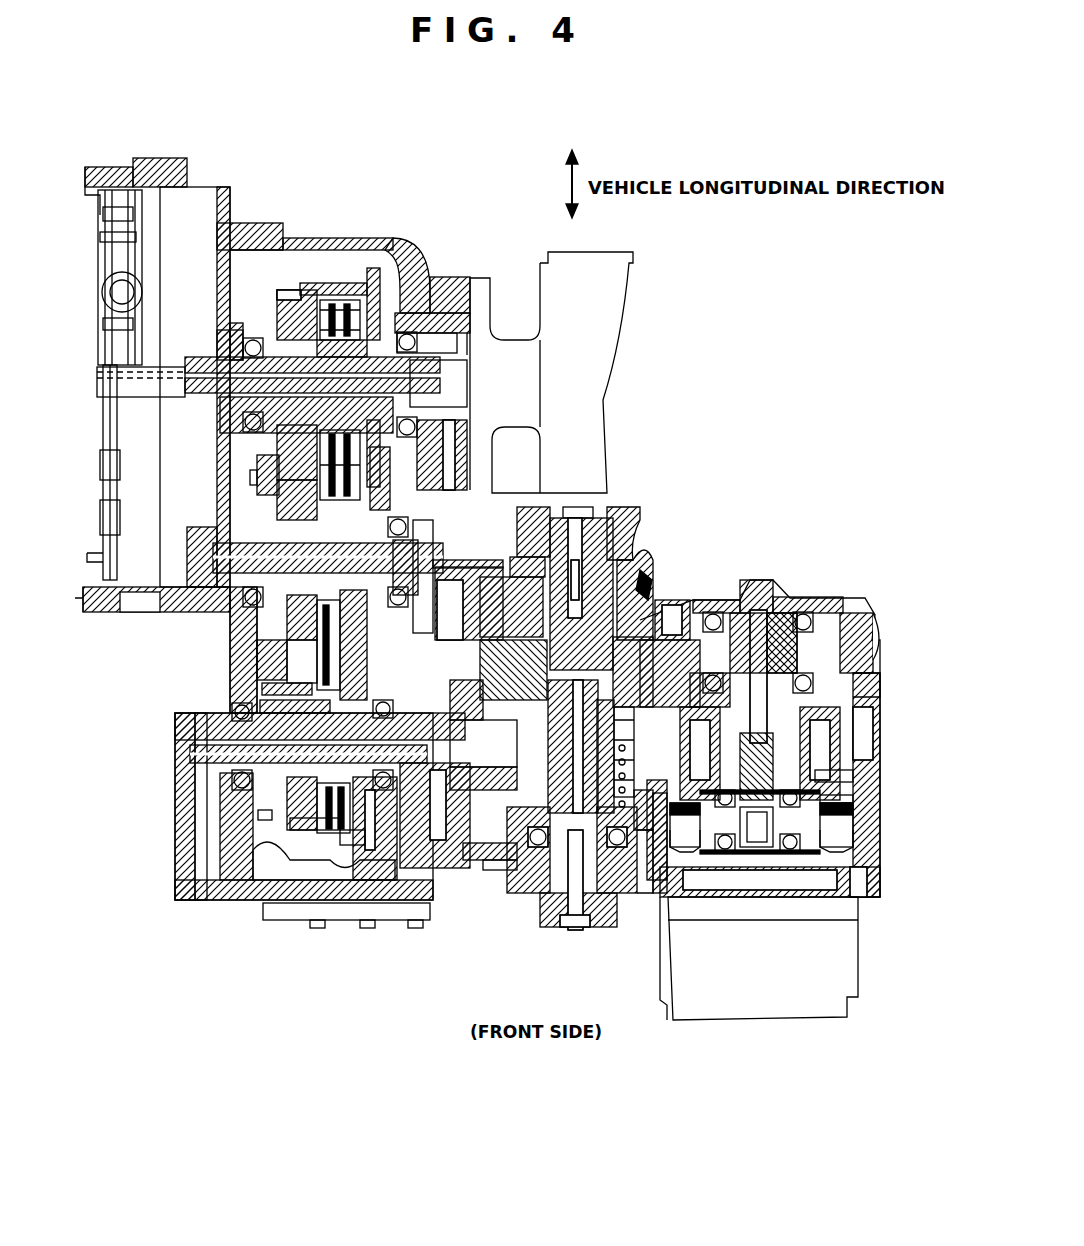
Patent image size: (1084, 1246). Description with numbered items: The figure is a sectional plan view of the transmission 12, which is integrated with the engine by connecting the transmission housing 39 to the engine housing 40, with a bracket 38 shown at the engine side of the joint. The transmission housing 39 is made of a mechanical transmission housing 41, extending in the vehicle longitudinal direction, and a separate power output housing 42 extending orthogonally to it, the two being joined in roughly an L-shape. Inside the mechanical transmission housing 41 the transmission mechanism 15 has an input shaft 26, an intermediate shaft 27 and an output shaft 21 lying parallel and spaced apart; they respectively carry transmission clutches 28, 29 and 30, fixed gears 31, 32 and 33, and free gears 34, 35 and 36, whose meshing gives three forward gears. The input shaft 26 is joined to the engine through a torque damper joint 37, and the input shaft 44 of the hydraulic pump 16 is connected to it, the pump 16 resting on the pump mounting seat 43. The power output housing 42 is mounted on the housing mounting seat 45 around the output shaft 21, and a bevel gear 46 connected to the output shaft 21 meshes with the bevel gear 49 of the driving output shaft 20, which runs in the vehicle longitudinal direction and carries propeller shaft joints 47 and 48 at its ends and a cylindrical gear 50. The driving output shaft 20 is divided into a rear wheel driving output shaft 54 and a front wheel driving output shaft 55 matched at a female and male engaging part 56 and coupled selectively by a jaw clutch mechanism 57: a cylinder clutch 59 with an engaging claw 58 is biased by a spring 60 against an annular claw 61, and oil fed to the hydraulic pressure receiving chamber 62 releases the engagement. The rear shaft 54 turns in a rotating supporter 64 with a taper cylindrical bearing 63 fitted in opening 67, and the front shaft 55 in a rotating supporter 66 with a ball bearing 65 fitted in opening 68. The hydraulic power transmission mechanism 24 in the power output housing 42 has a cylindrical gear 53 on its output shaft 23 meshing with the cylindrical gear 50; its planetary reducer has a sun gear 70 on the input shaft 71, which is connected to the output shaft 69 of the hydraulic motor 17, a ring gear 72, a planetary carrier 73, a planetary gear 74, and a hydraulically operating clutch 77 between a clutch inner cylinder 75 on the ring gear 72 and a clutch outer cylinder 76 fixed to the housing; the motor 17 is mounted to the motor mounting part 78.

The transmission 12 is at (496, 258).
The transmission mechanism 15 is at (293, 848).
The hydraulic pump 16 is at (600, 320).
The hydraulic motor 17 is at (833, 972).
The driving output shaft 20 is at (600, 502).
The output shaft 21 is at (213, 716).
The output shaft 23 is at (752, 610).
The hydraulic power transmission mechanism 24 is at (860, 745).
The input shaft 26 is at (284, 292).
The intermediate shaft 27 is at (227, 600).
The transmission clutch 28 is at (337, 292).
The transmission clutch 29 is at (392, 495).
The transmission clutch 30 is at (305, 838).
The fixed gear 31 is at (309, 295).
The fixed gear 32 is at (262, 472).
The fixed gear 33 is at (340, 830).
The free gear 34 is at (388, 252).
The free gear 35 is at (432, 495).
The free gear 36 is at (265, 825).
The torque damper joint 37 is at (148, 262).
The bracket 38 is at (89, 190).
The transmission housing 39 is at (228, 654).
The engine housing 40 is at (150, 170).
The mechanical transmission housing 41 is at (372, 232).
The power output housing 42 is at (829, 600).
The pump mounting seat 43 is at (448, 278).
The input shaft 44 is at (450, 383).
The housing mounting seat 45 is at (388, 890).
The bevel gear 46 is at (493, 848).
The propeller shaft joint 47 is at (614, 910).
The propeller shaft joint 48 is at (643, 520).
The bevel gear 49 is at (635, 700).
The cylindrical gear 50 is at (672, 650).
The cylindrical gear 53 is at (790, 610).
The rear wheel driving output shaft 54 is at (630, 518).
The front wheel driving output shaft 55 is at (553, 905).
The female and male engaging part 56 is at (581, 665).
The jaw clutch mechanism 57 is at (585, 720).
The engaging claw 58 is at (522, 730).
The cylinder clutch 59 is at (628, 748).
The spring 60 is at (628, 770).
The annular claw 61 is at (545, 705).
The hydraulic pressure receiving chamber 62 is at (550, 752).
The taper cylindrical bearing 63 is at (647, 590).
The rotating supporter 64 is at (471, 588).
The ball bearing 65 is at (583, 905).
The rotating supporter 66 is at (650, 890).
The opening 67 is at (693, 602).
The opening 68 is at (630, 785).
The output shaft 69 is at (757, 837).
The sun gear 70 is at (757, 760).
The input shaft 71 is at (855, 800).
The ring gear 72 is at (672, 748).
The planetary carrier 73 is at (872, 688).
The planetary gear 74 is at (852, 776).
The clutch inner cylinder 75 is at (872, 880).
The clutch outer cylinder 76 is at (847, 826).
The hydraulically operating clutch 77 is at (852, 840).
The motor mounting part 78 is at (661, 900).